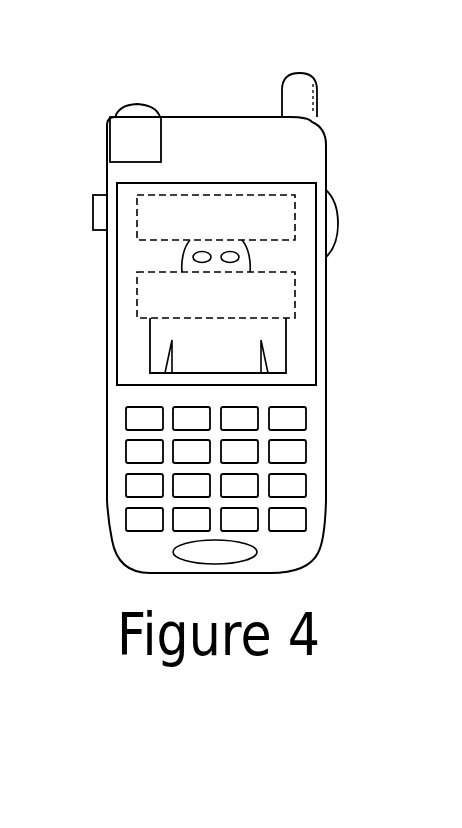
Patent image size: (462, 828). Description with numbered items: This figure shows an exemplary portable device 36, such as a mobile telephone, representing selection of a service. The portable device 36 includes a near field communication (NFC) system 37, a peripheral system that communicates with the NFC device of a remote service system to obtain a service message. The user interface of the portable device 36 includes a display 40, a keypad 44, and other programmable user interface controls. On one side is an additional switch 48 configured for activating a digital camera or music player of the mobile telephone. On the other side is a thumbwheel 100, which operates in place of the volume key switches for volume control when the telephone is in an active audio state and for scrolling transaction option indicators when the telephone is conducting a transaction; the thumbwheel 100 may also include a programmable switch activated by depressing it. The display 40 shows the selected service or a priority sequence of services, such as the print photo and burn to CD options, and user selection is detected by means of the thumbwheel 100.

The portable device 36 is at (216, 117).
The near field communication (NFC) system 37 is at (154, 155).
The display 40 is at (327, 368).
The keypad 44 is at (338, 407).
The additional switch 48 is at (93, 210).
The thumbwheel 100 is at (338, 205).